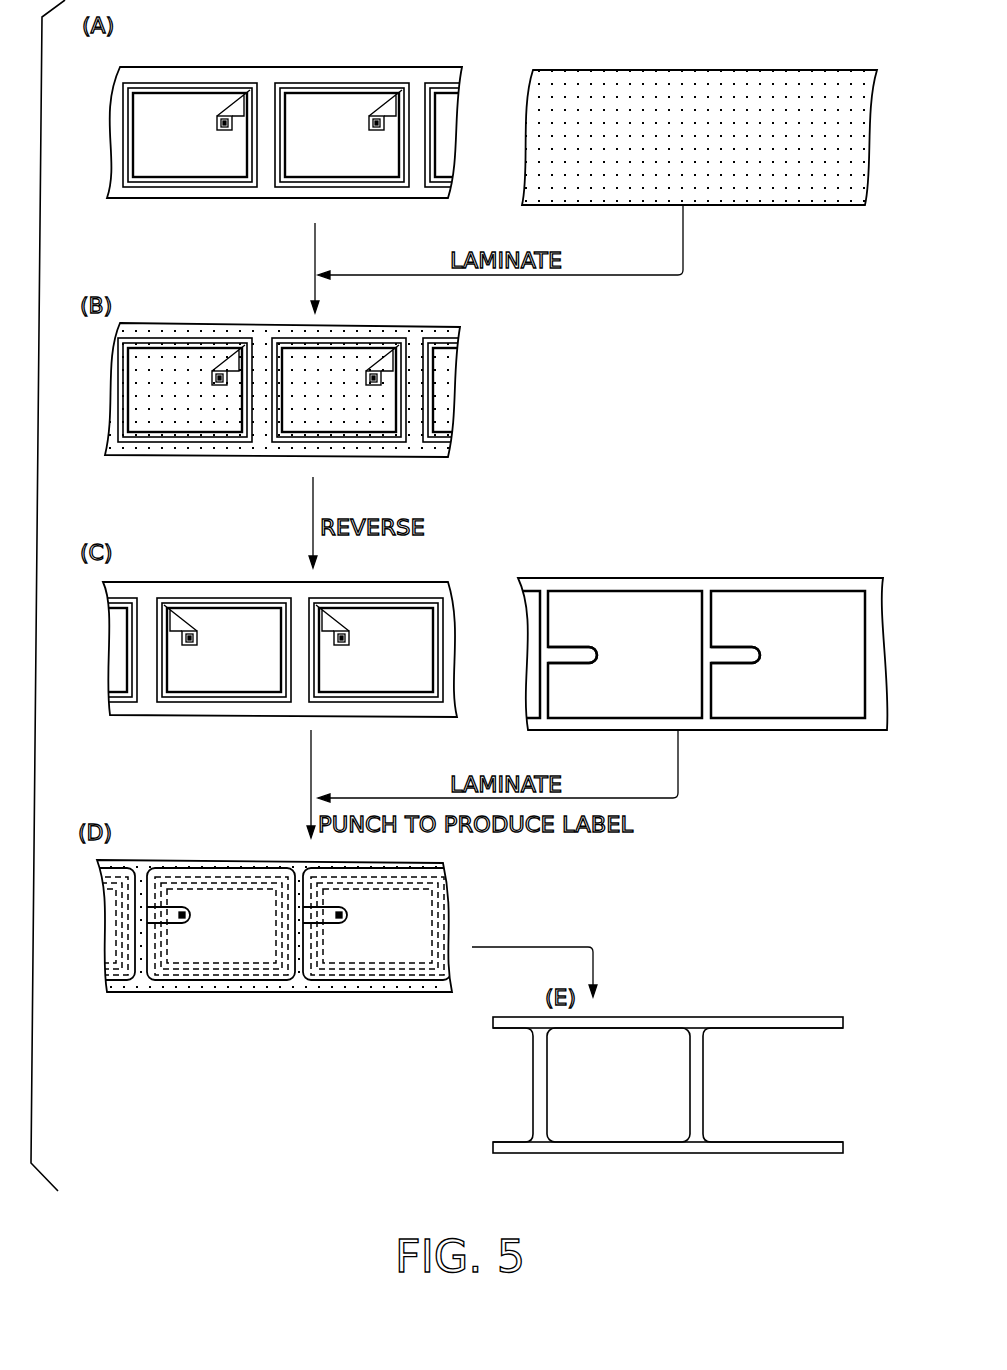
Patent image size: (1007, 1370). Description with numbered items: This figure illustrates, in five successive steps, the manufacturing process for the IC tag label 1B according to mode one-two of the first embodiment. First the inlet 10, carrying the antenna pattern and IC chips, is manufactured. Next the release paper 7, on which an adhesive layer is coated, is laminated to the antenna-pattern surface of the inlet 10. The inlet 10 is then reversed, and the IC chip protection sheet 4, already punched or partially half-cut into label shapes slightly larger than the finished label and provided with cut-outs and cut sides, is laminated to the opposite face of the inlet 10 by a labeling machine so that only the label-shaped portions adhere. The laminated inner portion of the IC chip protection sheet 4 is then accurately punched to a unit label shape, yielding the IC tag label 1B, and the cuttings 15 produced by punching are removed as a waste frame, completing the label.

The inlet 10 is at (398, 196).
The release paper 7 is at (759, 205).
The IC chip protection sheet 4 is at (696, 663).
The IC tag label 1B is at (226, 902).
The cuttings 15 is at (676, 1153).